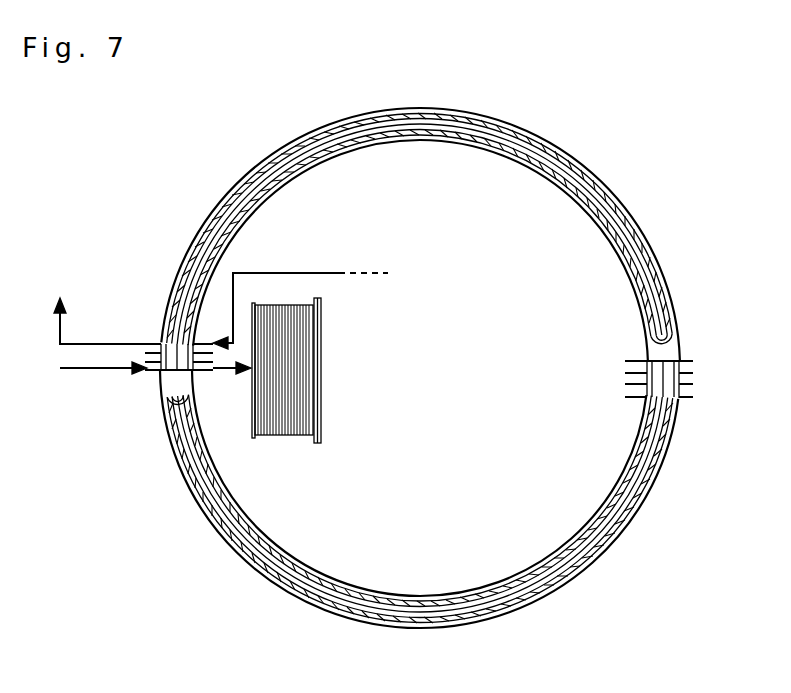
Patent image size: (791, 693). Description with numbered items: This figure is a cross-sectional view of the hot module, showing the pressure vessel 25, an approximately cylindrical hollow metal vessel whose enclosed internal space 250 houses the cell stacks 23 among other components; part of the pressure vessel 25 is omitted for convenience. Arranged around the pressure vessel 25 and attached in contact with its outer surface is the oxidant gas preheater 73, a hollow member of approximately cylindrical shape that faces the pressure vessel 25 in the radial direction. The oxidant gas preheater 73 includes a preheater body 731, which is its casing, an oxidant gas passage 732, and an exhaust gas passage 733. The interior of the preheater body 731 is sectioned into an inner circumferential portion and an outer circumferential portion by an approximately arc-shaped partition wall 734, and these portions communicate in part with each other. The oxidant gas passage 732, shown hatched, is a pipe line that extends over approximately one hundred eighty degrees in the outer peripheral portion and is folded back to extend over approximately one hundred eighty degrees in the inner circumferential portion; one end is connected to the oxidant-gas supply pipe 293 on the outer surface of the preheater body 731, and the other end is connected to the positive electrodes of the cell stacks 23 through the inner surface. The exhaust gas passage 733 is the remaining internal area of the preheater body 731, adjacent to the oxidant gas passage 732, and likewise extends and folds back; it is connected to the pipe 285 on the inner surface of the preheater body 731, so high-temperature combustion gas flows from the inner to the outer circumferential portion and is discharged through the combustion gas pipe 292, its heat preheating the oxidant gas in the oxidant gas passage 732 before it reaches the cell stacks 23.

The oxidant gas preheater 73 is at (88, 233).
The preheater body 731 is at (208, 214).
The oxidant gas passage 732 is at (195, 245).
The exhaust gas passage 733 is at (181, 273).
The partition wall 734 is at (284, 170).
The pressure vessel 25 is at (415, 144).
The internal space 250 is at (527, 196).
The pipe 285 is at (313, 272).
The combustion gas pipe 292 is at (93, 344).
The oxidant-gas supply pipe 293 is at (93, 370).
The cell stack 23 is at (298, 372).